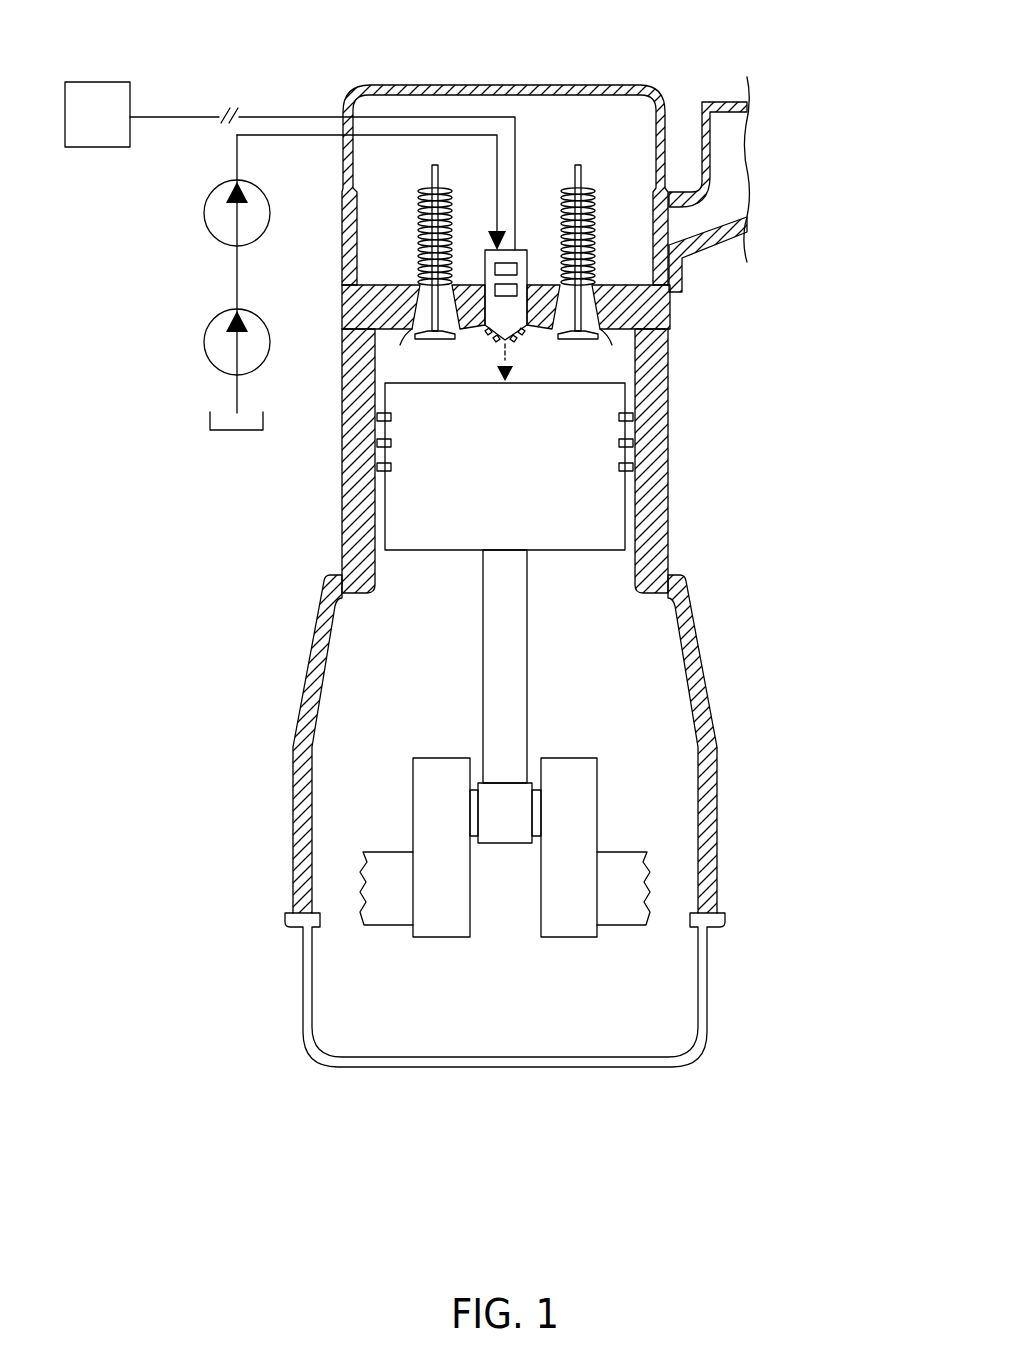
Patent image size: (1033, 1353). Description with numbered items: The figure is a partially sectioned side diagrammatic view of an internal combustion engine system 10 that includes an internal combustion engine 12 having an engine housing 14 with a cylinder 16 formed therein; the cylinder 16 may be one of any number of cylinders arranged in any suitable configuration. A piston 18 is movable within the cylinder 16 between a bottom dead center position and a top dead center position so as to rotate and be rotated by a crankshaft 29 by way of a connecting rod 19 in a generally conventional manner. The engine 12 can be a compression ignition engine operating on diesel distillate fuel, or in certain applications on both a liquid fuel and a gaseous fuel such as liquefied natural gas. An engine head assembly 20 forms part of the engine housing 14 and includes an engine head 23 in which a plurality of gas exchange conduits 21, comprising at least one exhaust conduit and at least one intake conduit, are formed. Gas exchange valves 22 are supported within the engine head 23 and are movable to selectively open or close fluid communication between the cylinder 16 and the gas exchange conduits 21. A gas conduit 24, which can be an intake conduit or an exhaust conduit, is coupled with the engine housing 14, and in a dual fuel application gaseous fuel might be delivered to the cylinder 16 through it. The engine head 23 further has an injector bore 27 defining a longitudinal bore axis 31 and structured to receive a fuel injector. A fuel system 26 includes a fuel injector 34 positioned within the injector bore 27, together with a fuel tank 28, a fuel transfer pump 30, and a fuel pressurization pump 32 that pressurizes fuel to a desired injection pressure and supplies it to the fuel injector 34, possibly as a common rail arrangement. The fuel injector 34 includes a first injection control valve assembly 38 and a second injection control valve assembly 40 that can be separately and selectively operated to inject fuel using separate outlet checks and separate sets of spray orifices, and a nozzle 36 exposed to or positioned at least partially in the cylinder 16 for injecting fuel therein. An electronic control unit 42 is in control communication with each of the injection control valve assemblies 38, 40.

The internal combustion engine system 10 is at (808, 42).
The internal combustion engine 12 is at (696, 362).
The engine housing 14 is at (670, 394).
The cylinder 16 is at (392, 366).
The piston 18 is at (573, 528).
The connecting rod 19 is at (527, 654).
The engine head assembly 20 is at (604, 276).
The gas exchange conduits 21 is at (418, 315).
The gas exchange valves 22 is at (432, 340).
The engine head 23 is at (670, 283).
The gas conduit 24 is at (722, 100).
The fuel system 26 is at (172, 268).
The injector bore 27 is at (485, 305).
The fuel tank 28 is at (210, 418).
The crankshaft 29 is at (597, 800).
The fuel transfer pump 30 is at (205, 334).
The longitudinal bore axis 31 is at (502, 355).
The fuel pressurization pump 32 is at (205, 204).
The fuel injector 34 is at (487, 256).
The nozzle 36 is at (526, 352).
The first injection control valve assembly 38 is at (517, 267).
The second injection control valve assembly 40 is at (517, 290).
The electronic control unit 42 is at (105, 82).